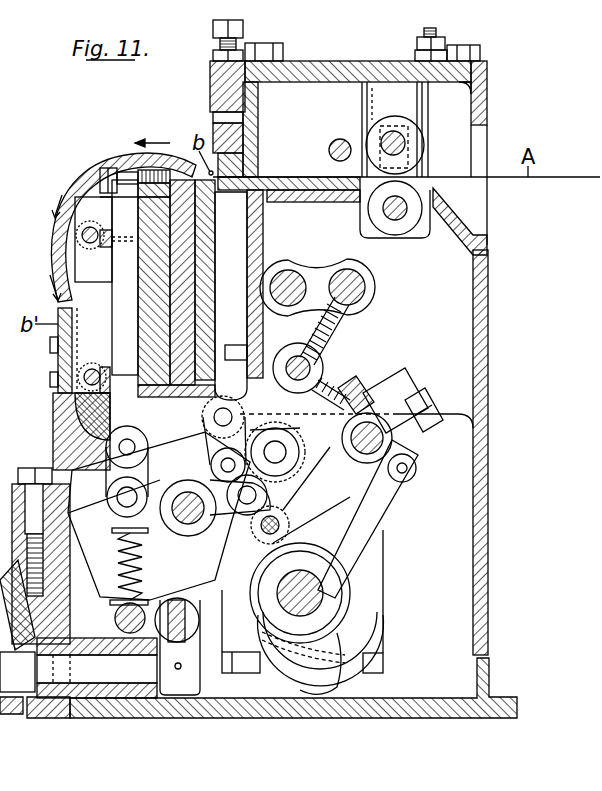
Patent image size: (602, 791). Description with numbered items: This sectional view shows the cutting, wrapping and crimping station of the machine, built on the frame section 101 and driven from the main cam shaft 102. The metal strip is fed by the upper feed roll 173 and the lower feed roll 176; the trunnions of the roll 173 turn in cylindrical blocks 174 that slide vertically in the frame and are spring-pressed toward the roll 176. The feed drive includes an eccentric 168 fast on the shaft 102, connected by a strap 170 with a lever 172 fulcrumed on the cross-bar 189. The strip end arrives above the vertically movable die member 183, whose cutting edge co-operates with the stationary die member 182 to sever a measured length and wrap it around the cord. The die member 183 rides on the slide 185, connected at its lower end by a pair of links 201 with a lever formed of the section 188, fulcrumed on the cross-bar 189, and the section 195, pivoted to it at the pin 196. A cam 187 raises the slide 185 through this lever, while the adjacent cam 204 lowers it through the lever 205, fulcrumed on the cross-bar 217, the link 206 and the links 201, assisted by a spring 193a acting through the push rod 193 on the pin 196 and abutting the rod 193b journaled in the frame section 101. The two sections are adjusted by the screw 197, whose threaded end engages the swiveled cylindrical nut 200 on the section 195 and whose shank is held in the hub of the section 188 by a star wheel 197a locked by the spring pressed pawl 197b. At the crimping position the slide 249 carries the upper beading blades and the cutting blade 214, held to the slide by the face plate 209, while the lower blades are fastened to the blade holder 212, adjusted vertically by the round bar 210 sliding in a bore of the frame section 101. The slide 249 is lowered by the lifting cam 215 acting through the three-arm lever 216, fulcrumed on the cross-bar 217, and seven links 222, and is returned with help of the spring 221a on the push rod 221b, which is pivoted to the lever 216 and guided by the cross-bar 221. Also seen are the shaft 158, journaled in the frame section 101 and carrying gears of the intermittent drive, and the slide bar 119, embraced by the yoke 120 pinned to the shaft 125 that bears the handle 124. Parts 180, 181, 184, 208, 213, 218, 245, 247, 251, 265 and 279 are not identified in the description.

The frame section 101 is at (488, 538).
The main cam shaft 102 is at (322, 582).
The slide bar 119 is at (137, 580).
The yoke 120 is at (177, 646).
The handle 124 is at (17, 672).
The shaft 125 is at (97, 668).
The shaft 158 is at (300, 264).
The eccentric 168 is at (262, 592).
The strap 170 is at (368, 519).
The lever 172 is at (418, 468).
The upper feed roll 173 is at (378, 128).
The cylindrical blocks 174 is at (12, 123).
The lower feed roll 176 is at (432, 191).
The housing cover 180 is at (487, 105).
The guide block 181 is at (243, 140).
The stationary die member 182 is at (245, 163).
The die member 183 is at (207, 280).
The slide bar 184 is at (183, 282).
The slide 185 is at (231, 296).
The cam 187 is at (332, 660).
The lever section 188 is at (300, 485).
The cross-bar 189 is at (372, 463).
The push rod 193 is at (340, 336).
The spring 193a is at (342, 322).
The rod 193b is at (362, 277).
The lever section 195 is at (323, 368).
The pivot pin 196 is at (286, 455).
The screw 197 is at (423, 413).
The star wheel 197a is at (350, 392).
The spring pressed pawl 197b is at (378, 408).
The swiveled cylindrical nut 200 is at (322, 375).
The links 201 is at (204, 425).
The cam 204 is at (337, 640).
The lever 205 is at (159, 516).
The link 206 is at (211, 438).
The slide 208 is at (172, 340).
The face plate 209 is at (58, 223).
The round bar 210 is at (55, 420).
The blade holder 212 is at (55, 402).
The pin 213 is at (167, 230).
The cutting blade 214 is at (107, 277).
The lifting cam 215 is at (368, 575).
The three-arm lever 216 is at (118, 582).
The cross-bar 217 is at (188, 480).
The pin 218 is at (77, 371).
The cross-bar 221 is at (122, 635).
The spring 221a is at (118, 567).
The push rod 221b is at (118, 535).
The links 222 is at (70, 470).
The adjusting screw 245 is at (88, 162).
The guide 247 is at (57, 332).
The slide 249 is at (110, 187).
The pin 251 is at (153, 350).
The pin 265 is at (340, 139).
The base flange 279 is at (491, 667).